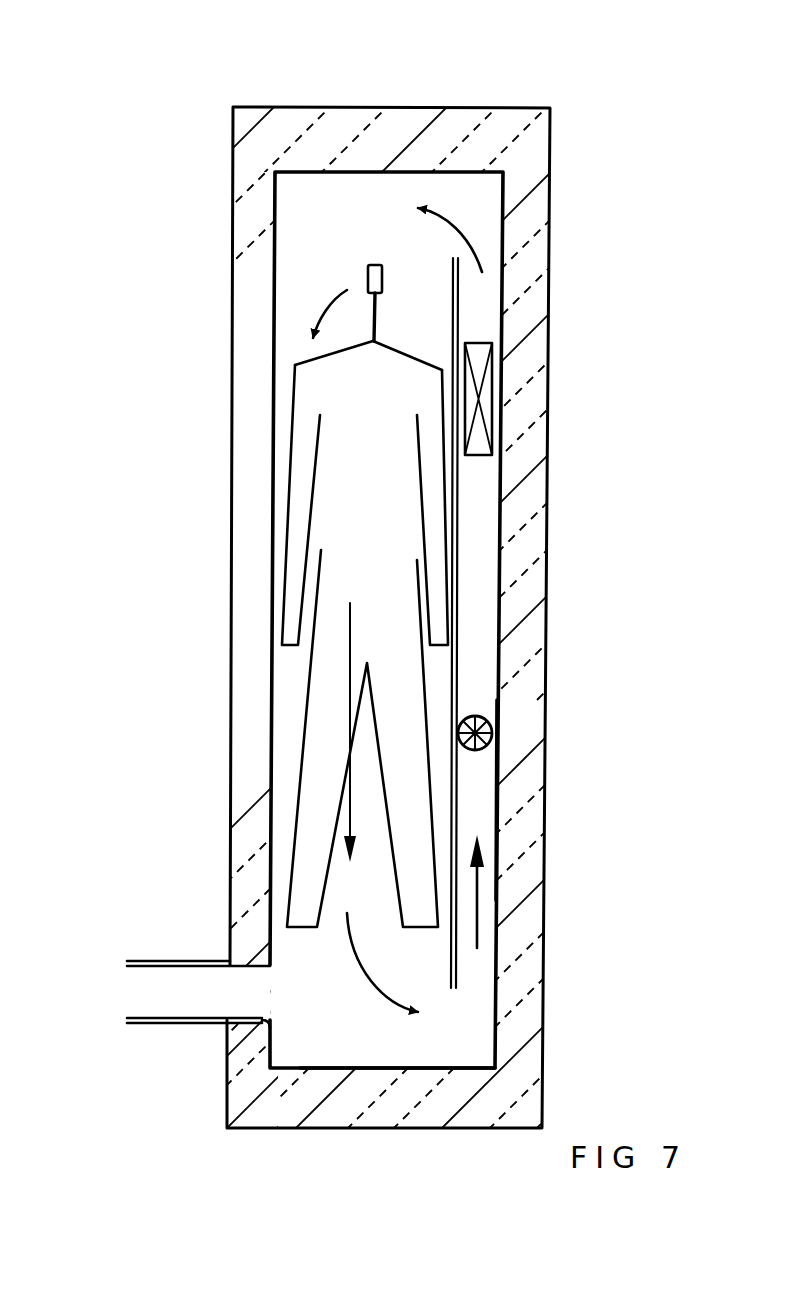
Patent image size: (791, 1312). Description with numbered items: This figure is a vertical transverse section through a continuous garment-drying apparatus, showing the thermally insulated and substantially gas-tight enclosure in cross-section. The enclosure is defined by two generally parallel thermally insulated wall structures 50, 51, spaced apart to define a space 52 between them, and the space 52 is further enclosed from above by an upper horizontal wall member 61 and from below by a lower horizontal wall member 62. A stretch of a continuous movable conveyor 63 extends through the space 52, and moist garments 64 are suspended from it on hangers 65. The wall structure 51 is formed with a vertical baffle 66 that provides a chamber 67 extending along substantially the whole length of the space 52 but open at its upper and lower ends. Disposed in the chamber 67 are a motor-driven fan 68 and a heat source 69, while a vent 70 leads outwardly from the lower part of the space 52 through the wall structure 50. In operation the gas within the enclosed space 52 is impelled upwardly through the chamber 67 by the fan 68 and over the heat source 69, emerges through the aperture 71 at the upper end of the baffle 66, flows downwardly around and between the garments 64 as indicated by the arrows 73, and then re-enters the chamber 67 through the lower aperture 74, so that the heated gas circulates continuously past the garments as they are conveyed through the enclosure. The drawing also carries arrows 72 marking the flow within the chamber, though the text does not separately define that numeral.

The thermally insulated wall structure 50 is at (240, 577).
The thermally insulated wall structure 51 is at (535, 573).
The space 52 is at (377, 1032).
The upper horizontal wall member 61 is at (297, 122).
The lower horizontal wall member 62 is at (288, 1102).
The continuous movable conveyor 63 is at (366, 281).
The moist garments 64 is at (347, 465).
The hangers 65 is at (381, 320).
The vertical baffle 66 is at (462, 492).
The chamber 67 is at (480, 782).
The motor-driven fan 68 is at (493, 730).
The heat source 69 is at (488, 397).
The vent 70 is at (138, 992).
The aperture 71 is at (488, 252).
The air flow 72 is at (455, 258).
The arrows 73 is at (317, 321).
The lower aperture 74 is at (465, 1047).